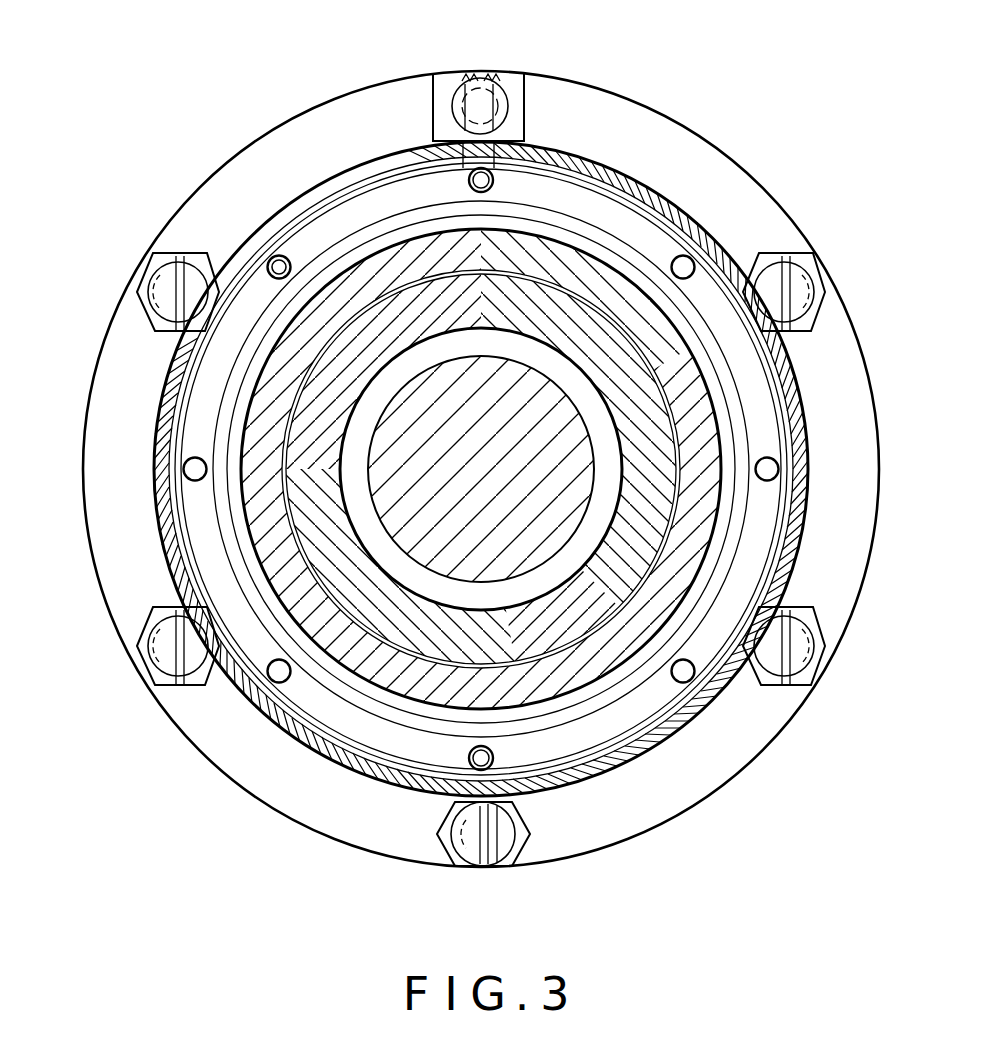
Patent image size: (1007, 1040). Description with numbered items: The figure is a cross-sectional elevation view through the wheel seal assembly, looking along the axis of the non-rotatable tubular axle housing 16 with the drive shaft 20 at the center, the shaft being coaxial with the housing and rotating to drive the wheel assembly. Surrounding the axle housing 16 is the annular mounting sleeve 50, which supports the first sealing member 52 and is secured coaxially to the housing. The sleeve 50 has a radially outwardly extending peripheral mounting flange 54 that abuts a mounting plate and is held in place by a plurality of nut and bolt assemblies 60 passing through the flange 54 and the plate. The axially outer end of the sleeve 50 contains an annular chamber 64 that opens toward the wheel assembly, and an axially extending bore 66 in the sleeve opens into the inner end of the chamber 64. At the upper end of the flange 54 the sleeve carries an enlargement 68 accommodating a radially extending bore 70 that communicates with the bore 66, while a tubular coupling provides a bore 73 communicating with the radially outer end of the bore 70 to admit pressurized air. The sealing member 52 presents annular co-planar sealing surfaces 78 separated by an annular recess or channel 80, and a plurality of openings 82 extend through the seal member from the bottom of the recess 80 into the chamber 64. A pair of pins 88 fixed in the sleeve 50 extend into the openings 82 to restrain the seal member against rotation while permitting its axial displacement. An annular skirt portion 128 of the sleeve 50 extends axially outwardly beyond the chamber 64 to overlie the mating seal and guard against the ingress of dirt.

The tubular axle housing 16 is at (440, 638).
The drive shaft 20 is at (481, 469).
The annular mounting sleeve 50 is at (680, 384).
The first sealing member 52 is at (655, 236).
The peripheral mounting flange 54 is at (257, 763).
The nut and bolt assemblies 60 is at (773, 268).
The annular chamber 64 is at (779, 401).
The axially extending bore 66 is at (552, 157).
The enlargement 68 is at (510, 91).
The radially extending bore 70 is at (463, 166).
The bore 73 is at (476, 73).
The annular co-planar sealing surfaces 78 is at (568, 213).
The annular recess or channel 80 is at (620, 218).
The openings 82 is at (691, 259).
The pins 88 is at (273, 257).
The annular skirt portion 128 is at (780, 338).